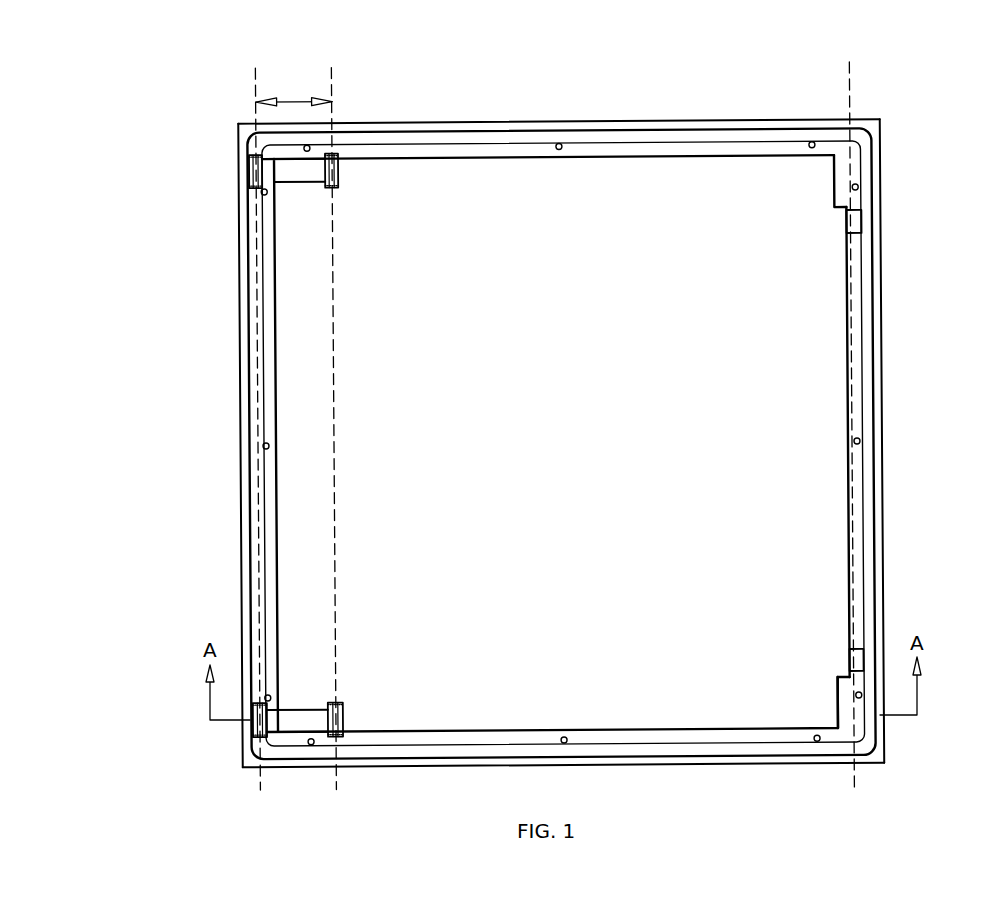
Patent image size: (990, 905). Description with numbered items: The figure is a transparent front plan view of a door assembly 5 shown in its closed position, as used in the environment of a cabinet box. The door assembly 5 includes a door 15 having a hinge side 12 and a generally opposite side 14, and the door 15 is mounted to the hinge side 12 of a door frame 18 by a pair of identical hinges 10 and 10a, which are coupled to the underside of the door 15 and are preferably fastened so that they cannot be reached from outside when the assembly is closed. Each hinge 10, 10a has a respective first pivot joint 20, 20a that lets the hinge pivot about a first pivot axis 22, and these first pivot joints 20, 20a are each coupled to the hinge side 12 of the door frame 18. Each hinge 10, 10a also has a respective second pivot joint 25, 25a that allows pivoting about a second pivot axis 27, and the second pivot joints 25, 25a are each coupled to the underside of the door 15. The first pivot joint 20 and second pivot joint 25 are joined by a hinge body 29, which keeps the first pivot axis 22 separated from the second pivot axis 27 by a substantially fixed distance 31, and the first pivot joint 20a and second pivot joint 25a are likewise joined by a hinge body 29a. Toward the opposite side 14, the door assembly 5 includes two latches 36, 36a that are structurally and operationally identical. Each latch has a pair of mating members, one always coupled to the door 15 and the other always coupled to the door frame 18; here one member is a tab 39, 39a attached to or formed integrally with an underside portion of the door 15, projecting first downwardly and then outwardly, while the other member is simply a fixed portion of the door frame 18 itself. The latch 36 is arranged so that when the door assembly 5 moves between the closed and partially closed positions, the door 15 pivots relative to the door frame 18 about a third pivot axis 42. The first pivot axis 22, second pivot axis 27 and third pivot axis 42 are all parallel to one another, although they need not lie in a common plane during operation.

The door assembly 5 is at (950, 86).
The hinge 10 is at (296, 700).
The hinge 10a is at (311, 198).
The hinge side 12 is at (267, 53).
The opposite side 14 is at (829, 50).
The door 15 is at (600, 137).
The door frame 18 is at (878, 277).
The first pivot joint 20 is at (257, 725).
The first pivot joint 20a is at (255, 165).
The first pivot axis 22 is at (252, 85).
The second pivot joint 25 is at (345, 720).
The second pivot joint 25a is at (340, 162).
The second pivot axis 27 is at (333, 80).
The hinge body 29 is at (300, 717).
The hinge body 29a is at (295, 173).
The fixed distance 31 is at (295, 99).
The latch 36 is at (800, 652).
The latch 36a is at (811, 227).
The tab 39 is at (860, 657).
The tab 39a is at (855, 222).
The third pivot axis 42 is at (852, 65).